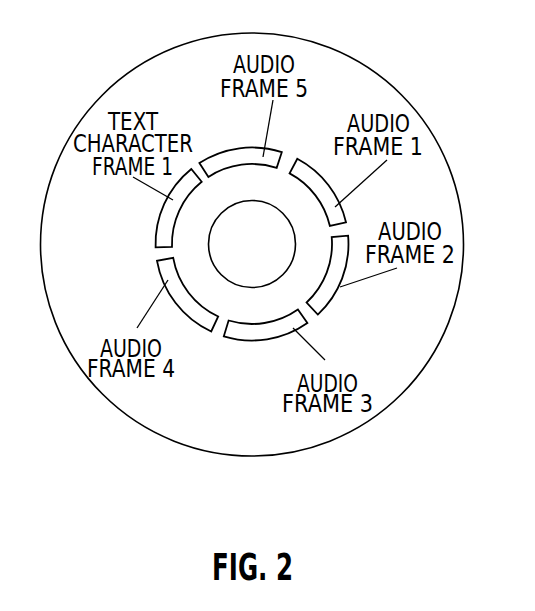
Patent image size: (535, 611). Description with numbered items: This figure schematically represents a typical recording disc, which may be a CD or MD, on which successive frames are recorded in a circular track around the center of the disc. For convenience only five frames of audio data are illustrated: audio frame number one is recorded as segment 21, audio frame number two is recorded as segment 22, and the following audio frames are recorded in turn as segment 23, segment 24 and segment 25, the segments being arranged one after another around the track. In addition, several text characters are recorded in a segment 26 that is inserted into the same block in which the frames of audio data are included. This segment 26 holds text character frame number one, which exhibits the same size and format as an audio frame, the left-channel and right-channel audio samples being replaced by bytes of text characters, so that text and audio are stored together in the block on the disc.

The segment 21 is at (310, 177).
The segment 22 is at (330, 298).
The segment 23 is at (257, 335).
The segment 24 is at (165, 270).
The segment 25 is at (233, 155).
The segment 26 is at (167, 220).